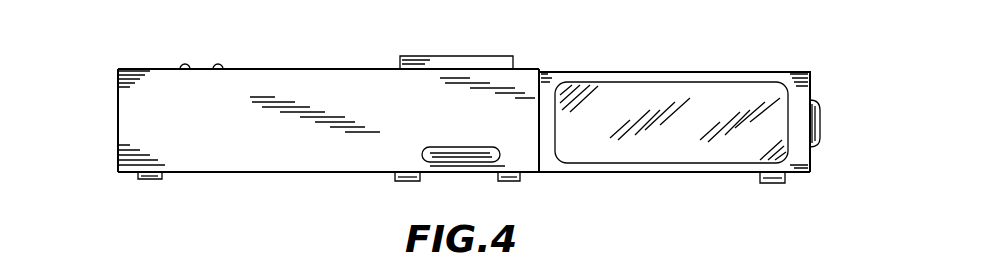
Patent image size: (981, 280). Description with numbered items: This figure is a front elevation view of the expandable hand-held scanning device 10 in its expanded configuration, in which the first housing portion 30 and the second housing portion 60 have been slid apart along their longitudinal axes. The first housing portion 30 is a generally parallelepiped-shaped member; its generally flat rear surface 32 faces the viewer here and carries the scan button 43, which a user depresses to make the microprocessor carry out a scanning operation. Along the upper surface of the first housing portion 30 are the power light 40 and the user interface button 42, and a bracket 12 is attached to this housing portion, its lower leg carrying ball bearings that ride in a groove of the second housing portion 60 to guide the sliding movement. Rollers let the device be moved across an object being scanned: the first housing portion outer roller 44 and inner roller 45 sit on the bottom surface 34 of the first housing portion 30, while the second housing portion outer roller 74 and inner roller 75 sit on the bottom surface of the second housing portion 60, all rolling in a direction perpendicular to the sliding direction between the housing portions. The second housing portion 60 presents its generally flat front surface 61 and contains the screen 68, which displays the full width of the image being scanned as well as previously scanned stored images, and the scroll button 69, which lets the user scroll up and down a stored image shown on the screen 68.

The hand-held scanning device 10 is at (606, 50).
The bracket 12 is at (494, 56).
The first housing portion 30 is at (118, 87).
The rear surface 32 is at (137, 133).
The bottom surface 34 is at (303, 69).
The power light 40 is at (185, 64).
The user interface button 42 is at (219, 64).
The scan button 43 is at (435, 147).
The first housing portion outer roller 44 is at (148, 180).
The first housing portion inner roller 45 is at (514, 183).
The second housing portion 60 is at (812, 90).
The front surface 61 is at (800, 136).
The screen 68 is at (703, 90).
The scroll button 69 is at (818, 145).
The second housing portion outer roller 74 is at (780, 184).
The second housing portion inner roller 75 is at (402, 183).